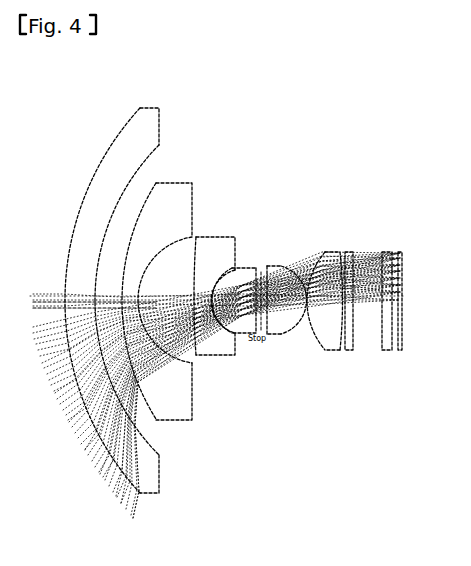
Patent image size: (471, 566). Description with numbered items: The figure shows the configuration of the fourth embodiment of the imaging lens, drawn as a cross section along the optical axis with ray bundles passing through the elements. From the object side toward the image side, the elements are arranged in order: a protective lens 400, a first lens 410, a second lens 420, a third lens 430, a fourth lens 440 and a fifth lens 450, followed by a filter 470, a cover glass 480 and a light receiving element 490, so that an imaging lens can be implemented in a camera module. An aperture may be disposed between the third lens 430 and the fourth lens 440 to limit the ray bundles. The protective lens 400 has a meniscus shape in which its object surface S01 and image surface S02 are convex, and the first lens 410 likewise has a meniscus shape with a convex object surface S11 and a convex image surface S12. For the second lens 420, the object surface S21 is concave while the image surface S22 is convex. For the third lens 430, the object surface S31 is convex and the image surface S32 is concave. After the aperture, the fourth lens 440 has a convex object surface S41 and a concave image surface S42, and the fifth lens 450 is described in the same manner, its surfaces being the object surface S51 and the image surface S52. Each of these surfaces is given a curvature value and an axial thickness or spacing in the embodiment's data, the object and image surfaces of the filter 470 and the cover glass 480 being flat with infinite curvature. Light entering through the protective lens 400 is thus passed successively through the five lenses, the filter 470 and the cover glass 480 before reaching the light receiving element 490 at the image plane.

The protective lens 400 is at (125, 306).
The first lens 410 is at (164, 310).
The second lens 420 is at (221, 307).
The third lens 430 is at (242, 294).
The fourth lens 440 is at (283, 324).
The fifth lens 450 is at (330, 301).
The filter 470 is at (349, 351).
The cover glass 480 is at (387, 351).
The light receiving element 490 is at (401, 351).
The object surface of the protective lens S01 is at (121, 133).
The image surface of the protective lens S02 is at (162, 124).
The object surface of the first lens S11 is at (155, 183).
The image surface of the first lens S12 is at (193, 185).
The object surface of the second lens S21 is at (195, 245).
The image surface of the second lens S22 is at (232, 268).
The object surface of the third lens S31 is at (236, 270).
The image surface of the third lens S32 is at (256, 268).
The object surface of the fourth lens S41 is at (268, 336).
The image surface of the fourth lens S42 is at (294, 337).
The object surface of the fifth lens S51 is at (325, 252).
The image surface of the fifth lens S52 is at (340, 252).